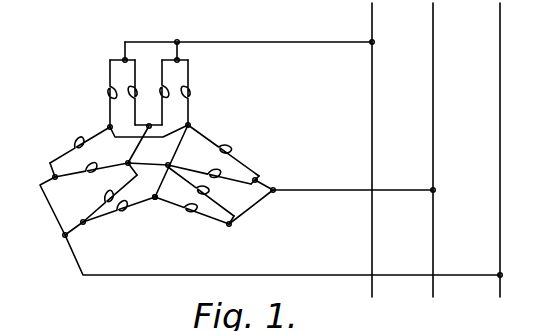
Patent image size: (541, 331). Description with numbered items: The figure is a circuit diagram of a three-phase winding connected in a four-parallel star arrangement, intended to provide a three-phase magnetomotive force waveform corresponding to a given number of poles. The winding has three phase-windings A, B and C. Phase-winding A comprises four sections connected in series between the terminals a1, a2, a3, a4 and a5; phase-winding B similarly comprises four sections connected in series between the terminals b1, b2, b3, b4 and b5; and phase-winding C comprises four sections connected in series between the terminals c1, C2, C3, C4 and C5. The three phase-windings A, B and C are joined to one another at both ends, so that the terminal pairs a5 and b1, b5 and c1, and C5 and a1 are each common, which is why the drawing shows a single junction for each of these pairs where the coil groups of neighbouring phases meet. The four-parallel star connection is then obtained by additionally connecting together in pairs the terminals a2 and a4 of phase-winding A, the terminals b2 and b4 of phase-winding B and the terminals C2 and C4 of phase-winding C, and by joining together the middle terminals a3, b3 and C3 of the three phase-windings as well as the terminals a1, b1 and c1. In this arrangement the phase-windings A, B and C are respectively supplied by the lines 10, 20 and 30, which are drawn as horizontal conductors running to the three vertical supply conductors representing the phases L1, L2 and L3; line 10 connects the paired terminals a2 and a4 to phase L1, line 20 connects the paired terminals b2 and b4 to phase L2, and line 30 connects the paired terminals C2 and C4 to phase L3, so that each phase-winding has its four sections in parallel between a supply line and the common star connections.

The phase-winding A is at (151, 21).
The phase-winding B is at (277, 232).
The phase-winding C is at (21, 235).
The terminal a1 is at (108, 126).
The terminal a2 is at (123, 58).
The terminal a3 is at (151, 127).
The terminal a4 is at (179, 61).
The terminal a5 is at (190, 125).
The terminal b1 is at (190, 125).
The terminal b2 is at (257, 179).
The terminal b3 is at (243, 191).
The terminal b4 is at (229, 226).
The terminal b5 is at (156, 199).
The terminal c1 is at (154, 199).
The terminal C2 is at (64, 237).
The terminal C3 is at (126, 164).
The terminal C4 is at (53, 177).
The terminal C5 is at (108, 128).
The line 10 is at (311, 42).
The line 20 is at (351, 190).
The line 30 is at (348, 275).
The phase L1 is at (360, 150).
The phase L2 is at (419, 150).
The phase L3 is at (484, 150).